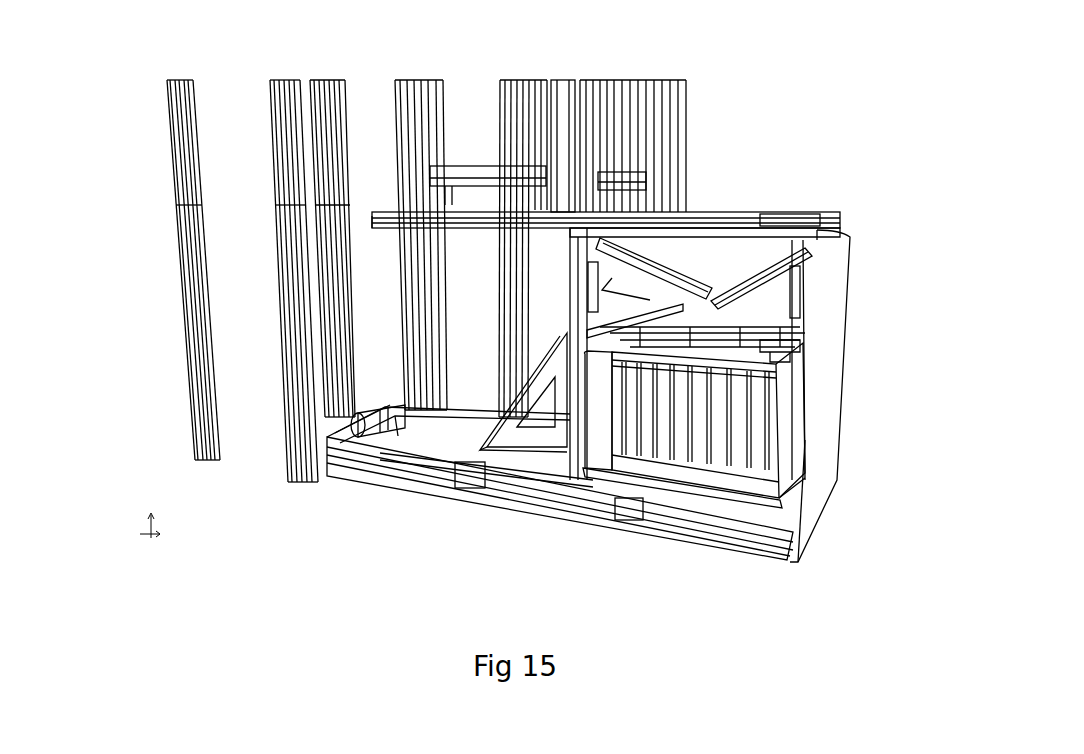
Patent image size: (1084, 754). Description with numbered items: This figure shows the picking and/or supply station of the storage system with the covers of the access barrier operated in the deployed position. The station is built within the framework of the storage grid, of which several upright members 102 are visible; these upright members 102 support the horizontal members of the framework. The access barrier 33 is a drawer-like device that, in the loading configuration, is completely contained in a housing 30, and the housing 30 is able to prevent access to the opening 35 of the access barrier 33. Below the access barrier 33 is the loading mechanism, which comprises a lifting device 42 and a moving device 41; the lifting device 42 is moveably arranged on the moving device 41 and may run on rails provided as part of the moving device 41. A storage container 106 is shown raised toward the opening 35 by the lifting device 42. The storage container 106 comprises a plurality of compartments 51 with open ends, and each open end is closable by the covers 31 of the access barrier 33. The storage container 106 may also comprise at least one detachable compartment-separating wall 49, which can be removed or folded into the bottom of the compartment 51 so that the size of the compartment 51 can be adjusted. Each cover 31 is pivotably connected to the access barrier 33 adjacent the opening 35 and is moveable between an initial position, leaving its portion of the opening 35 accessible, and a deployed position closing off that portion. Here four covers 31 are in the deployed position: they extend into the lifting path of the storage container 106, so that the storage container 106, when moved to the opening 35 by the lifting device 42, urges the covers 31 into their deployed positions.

The upright member 102 is at (205, 313).
The cover 31 is at (645, 268).
The opening 35 is at (714, 248).
The housing 30 is at (803, 213).
The compartment 51 is at (738, 345).
The detachable compartment-separating wall 49 is at (771, 356).
The storage container 106 is at (772, 442).
The access barrier 33 is at (822, 460).
The moving device 41 is at (390, 457).
The lifting device 42 is at (577, 393).